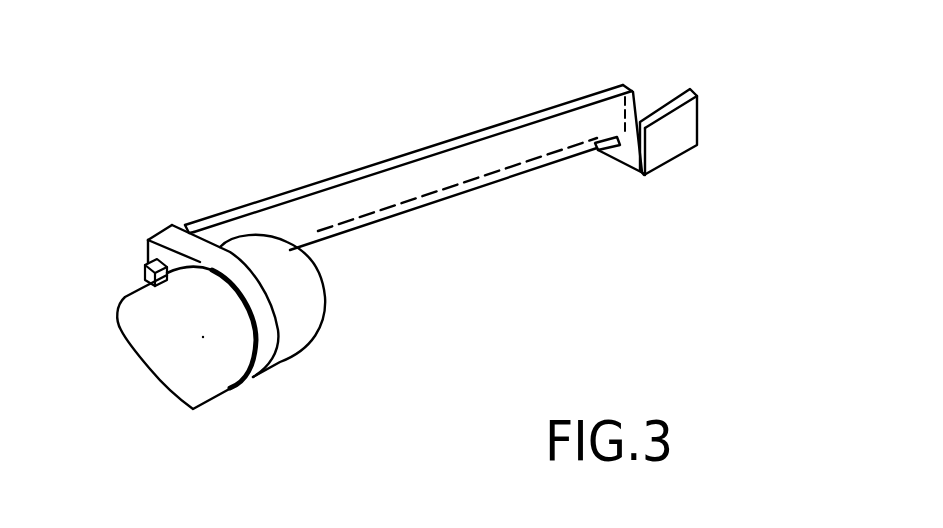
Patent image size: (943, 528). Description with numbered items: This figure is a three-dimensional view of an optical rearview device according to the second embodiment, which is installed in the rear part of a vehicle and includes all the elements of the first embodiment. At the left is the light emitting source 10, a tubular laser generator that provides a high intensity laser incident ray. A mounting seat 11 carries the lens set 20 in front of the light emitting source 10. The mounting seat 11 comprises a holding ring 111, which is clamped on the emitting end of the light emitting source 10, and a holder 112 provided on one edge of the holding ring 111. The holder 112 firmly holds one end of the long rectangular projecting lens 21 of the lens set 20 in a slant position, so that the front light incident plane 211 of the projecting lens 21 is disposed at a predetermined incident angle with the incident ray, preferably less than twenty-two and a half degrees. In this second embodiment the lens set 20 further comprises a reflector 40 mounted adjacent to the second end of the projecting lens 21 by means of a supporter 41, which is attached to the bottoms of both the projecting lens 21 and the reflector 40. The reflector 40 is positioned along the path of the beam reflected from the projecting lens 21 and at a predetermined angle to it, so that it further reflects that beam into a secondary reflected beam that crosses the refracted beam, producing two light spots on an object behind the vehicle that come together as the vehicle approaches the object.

The light emitting source 10 is at (283, 350).
The mounting seat 11 is at (167, 206).
The holding ring 111 is at (263, 358).
The holder 112 is at (145, 262).
The lens set 20 is at (533, 93).
The projecting lens 21 is at (497, 124).
The front light incident plane 211 is at (437, 180).
The reflector 40 is at (690, 133).
The supporter 41 is at (622, 160).